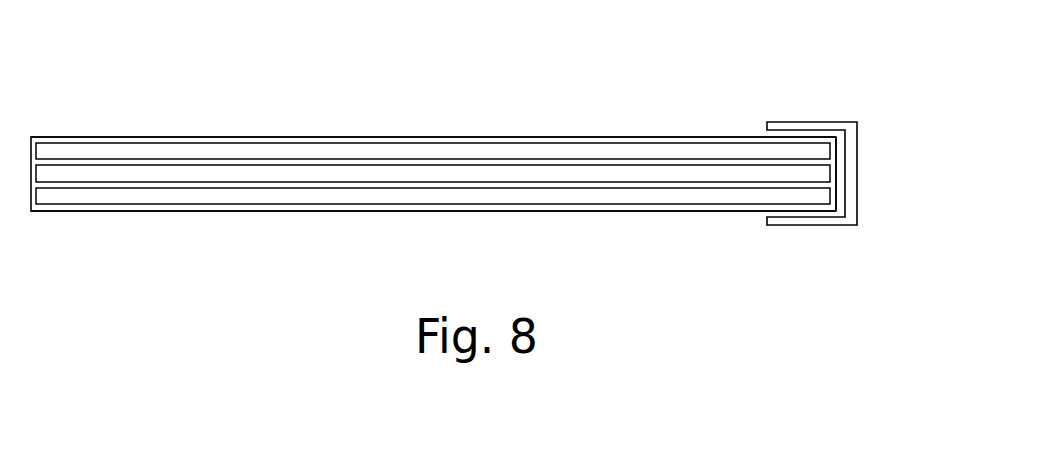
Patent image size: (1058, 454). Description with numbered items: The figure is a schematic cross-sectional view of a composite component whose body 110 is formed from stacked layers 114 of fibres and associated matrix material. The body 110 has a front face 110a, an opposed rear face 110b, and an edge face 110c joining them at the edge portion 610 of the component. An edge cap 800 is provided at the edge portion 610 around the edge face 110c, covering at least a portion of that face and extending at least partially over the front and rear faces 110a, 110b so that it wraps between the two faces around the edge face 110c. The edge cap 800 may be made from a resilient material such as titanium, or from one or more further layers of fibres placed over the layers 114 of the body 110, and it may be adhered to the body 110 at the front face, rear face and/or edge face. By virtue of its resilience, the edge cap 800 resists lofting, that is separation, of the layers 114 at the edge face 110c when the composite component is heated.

The edge portion 610 is at (848, 72).
The body 110 is at (365, 138).
The front face 110a is at (447, 138).
The rear face 110b is at (498, 210).
The edge face 110c is at (836, 172).
The layers 114 is at (267, 150).
The edge cap 800 is at (802, 128).